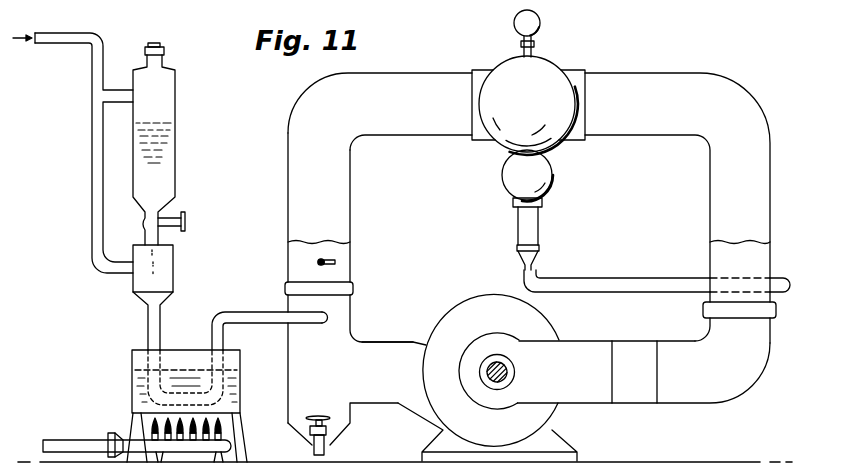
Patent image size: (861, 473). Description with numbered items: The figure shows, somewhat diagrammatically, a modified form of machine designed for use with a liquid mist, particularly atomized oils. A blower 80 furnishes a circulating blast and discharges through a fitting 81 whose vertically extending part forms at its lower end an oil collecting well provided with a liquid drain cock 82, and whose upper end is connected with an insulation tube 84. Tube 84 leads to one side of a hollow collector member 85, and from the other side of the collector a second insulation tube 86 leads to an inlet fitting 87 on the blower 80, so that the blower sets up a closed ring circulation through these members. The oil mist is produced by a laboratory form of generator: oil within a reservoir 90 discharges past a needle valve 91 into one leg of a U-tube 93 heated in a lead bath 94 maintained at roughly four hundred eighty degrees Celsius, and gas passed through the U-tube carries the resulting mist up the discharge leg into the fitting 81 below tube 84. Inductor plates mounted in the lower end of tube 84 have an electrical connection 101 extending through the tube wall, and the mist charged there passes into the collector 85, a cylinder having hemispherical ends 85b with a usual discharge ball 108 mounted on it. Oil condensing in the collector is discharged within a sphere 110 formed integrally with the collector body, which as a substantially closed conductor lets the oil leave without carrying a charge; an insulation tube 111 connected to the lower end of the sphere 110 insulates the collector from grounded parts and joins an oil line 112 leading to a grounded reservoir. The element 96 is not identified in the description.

The inlet pipe 96 is at (92, 65).
The reservoir 90 is at (175, 118).
The needle valve 91 is at (165, 222).
The U-tube 93 is at (160, 322).
The lead bath 94 is at (133, 377).
The insulation tube 84 is at (327, 222).
The electrical connection 101 is at (331, 270).
The liquid drain cock 82 is at (333, 448).
The blower 80 is at (457, 300).
The fitting 81 is at (416, 312).
The inlet fitting 87 is at (672, 390).
The second insulation tube 86 is at (727, 190).
The hollow collector member 85 is at (542, 82).
The hemispherical ends 85b is at (517, 114).
The discharge ball 108 is at (540, 30).
The sphere 110 is at (551, 183).
The insulation tube 111 is at (528, 226).
The oil line 112 is at (652, 253).